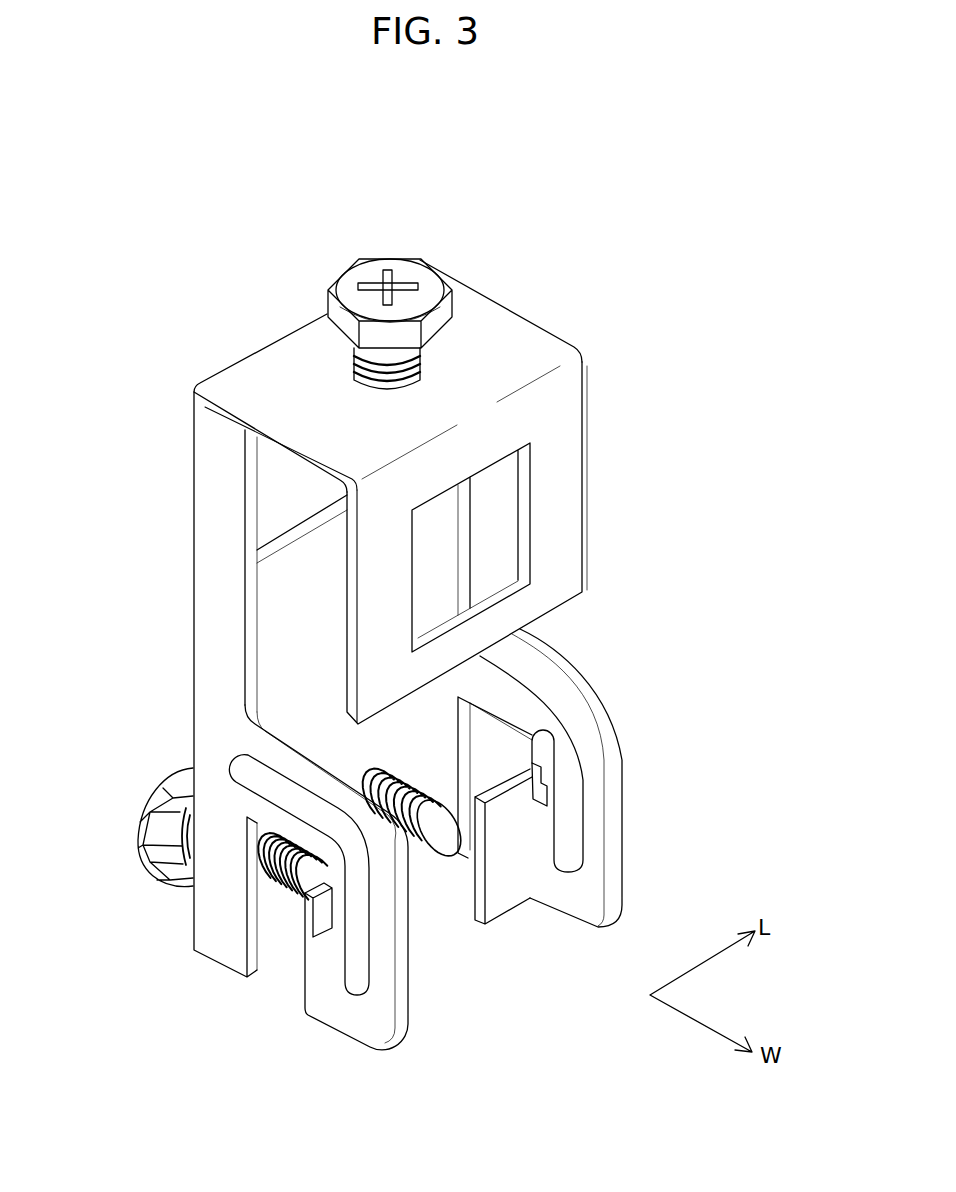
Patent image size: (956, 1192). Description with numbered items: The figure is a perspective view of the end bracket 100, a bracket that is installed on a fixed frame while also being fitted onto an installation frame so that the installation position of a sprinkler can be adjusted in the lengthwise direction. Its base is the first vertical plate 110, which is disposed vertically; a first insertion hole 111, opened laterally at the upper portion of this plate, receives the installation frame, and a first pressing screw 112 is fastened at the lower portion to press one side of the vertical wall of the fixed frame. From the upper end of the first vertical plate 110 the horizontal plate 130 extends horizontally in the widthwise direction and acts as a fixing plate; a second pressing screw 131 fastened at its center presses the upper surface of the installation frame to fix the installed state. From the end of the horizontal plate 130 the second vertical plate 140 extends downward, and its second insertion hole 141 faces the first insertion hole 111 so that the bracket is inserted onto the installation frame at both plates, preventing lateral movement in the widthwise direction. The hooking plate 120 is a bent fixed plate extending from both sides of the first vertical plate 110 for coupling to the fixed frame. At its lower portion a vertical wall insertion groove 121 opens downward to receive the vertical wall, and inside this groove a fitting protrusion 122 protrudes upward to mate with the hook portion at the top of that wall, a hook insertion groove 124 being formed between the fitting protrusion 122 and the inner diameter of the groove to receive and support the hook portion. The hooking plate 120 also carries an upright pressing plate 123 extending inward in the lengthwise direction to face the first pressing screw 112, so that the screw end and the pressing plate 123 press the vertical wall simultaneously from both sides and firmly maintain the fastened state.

The end bracket 100 is at (690, 340).
The first vertical plate 110 is at (284, 610).
The first insertion hole 111 is at (296, 480).
The first pressing screw 112 is at (165, 812).
The hooking plate 120 is at (612, 860).
The vertical wall insertion groove 121 is at (282, 940).
The fitting protrusion 122 is at (540, 732).
The pressing plate 123 is at (308, 957).
The hook insertion groove 124 is at (536, 795).
The horizontal plate 130 is at (505, 313).
The second pressing screw 131 is at (352, 271).
The second vertical plate 140 is at (575, 567).
The second insertion hole 141 is at (485, 512).